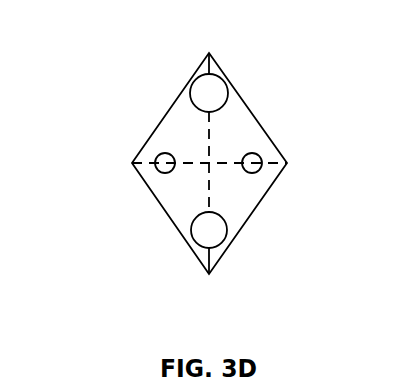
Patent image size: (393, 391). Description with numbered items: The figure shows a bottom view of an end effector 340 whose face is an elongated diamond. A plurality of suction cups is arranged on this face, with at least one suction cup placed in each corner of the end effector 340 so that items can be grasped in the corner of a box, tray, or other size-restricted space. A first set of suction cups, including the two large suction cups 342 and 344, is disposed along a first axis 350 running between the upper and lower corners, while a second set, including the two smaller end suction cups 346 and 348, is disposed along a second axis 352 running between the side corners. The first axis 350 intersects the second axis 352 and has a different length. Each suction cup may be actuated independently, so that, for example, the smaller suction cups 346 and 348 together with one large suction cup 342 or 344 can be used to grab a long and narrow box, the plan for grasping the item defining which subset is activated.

The end effector 340 is at (213, 52).
The suction cup 342 is at (226, 92).
The suction cup 344 is at (222, 246).
The suction cup 346 is at (155, 162).
The suction cup 348 is at (258, 170).
The first axis 350 is at (211, 138).
The second axis 352 is at (132, 163).